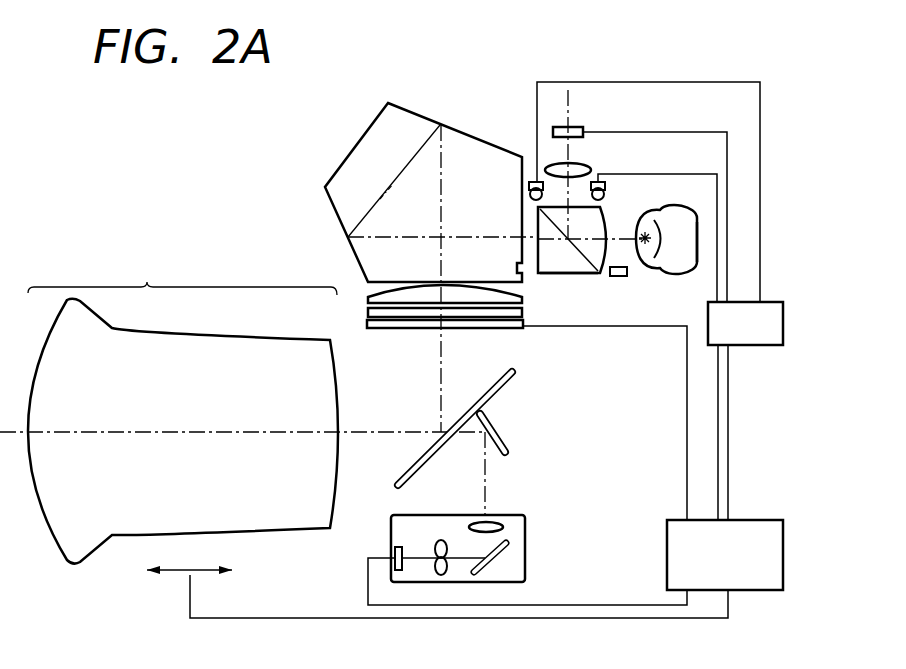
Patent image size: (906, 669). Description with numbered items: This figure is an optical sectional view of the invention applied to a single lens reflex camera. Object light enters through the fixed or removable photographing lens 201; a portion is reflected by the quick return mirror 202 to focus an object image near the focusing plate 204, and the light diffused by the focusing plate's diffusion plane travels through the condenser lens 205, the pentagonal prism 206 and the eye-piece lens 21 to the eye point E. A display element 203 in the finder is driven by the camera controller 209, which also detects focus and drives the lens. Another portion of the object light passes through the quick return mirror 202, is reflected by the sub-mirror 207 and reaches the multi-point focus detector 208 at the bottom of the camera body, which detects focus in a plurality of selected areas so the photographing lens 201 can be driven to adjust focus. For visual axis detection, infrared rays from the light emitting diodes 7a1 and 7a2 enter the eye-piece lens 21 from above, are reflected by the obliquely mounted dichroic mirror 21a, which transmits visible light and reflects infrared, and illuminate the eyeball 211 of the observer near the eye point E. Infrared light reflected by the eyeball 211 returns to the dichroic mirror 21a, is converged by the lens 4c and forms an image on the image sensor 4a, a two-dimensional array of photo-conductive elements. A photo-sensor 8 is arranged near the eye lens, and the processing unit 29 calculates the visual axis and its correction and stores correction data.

The photographing lens 201 is at (378, 433).
The pentagonal prism 206 is at (362, 135).
The condenser lens 205 is at (360, 288).
The focusing plate 204 is at (388, 312).
The display element 203 is at (477, 328).
The quick return mirror 202 is at (507, 387).
The sub-mirror 207 is at (510, 453).
The multi-point focus detector 208 is at (527, 538).
The camera controller 209 is at (783, 537).
The processing unit 29 is at (783, 318).
The image sensor 4a is at (575, 127).
The lens 4c is at (587, 165).
The light source 7a1 is at (532, 182).
The light source 7a2 is at (605, 185).
The eye-piece lens 21 is at (607, 220).
The dichroic mirror 21a is at (573, 273).
The eye point E is at (640, 243).
The eyeball 211 is at (697, 226).
The photo-sensor 8 is at (620, 277).